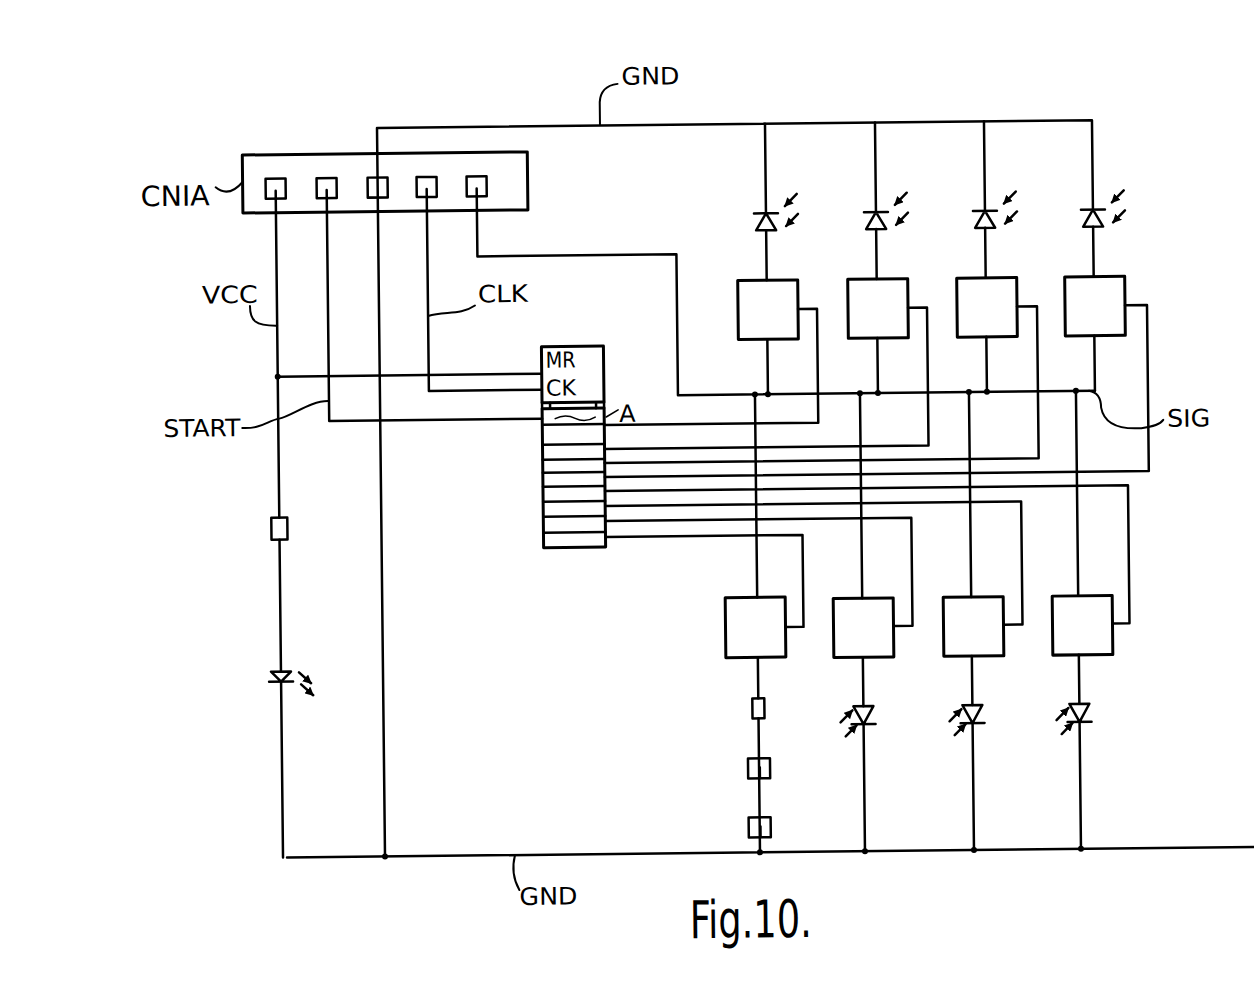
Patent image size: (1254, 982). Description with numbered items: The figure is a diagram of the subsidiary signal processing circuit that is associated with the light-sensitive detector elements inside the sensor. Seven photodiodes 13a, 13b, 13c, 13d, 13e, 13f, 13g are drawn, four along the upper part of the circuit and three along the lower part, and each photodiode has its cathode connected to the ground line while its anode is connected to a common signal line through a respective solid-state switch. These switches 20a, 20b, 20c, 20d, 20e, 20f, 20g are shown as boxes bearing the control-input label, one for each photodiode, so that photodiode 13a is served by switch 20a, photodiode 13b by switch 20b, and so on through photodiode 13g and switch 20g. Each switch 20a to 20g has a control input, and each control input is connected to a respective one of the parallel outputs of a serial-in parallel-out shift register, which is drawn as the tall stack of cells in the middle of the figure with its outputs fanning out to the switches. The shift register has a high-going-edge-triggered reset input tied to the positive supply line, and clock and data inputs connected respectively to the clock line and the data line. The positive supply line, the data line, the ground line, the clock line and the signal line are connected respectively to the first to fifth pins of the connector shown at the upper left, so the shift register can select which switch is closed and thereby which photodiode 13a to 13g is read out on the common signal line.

The photodiode 13a is at (746, 214).
The photodiode 13b is at (855, 215).
The photodiode 13c is at (966, 216).
The photodiode 13d is at (1070, 217).
The photodiode 13e is at (851, 741).
The photodiode 13f is at (958, 742).
The photodiode 13g is at (1066, 743).
The solid-state switch 20a is at (739, 309).
The solid-state switch 20b is at (849, 310).
The solid-state switch 20c is at (958, 311).
The solid-state switch 20d is at (1066, 312).
The solid-state switch 20e is at (836, 641).
The solid-state switch 20f is at (959, 660).
The solid-state switch 20g is at (1111, 643).